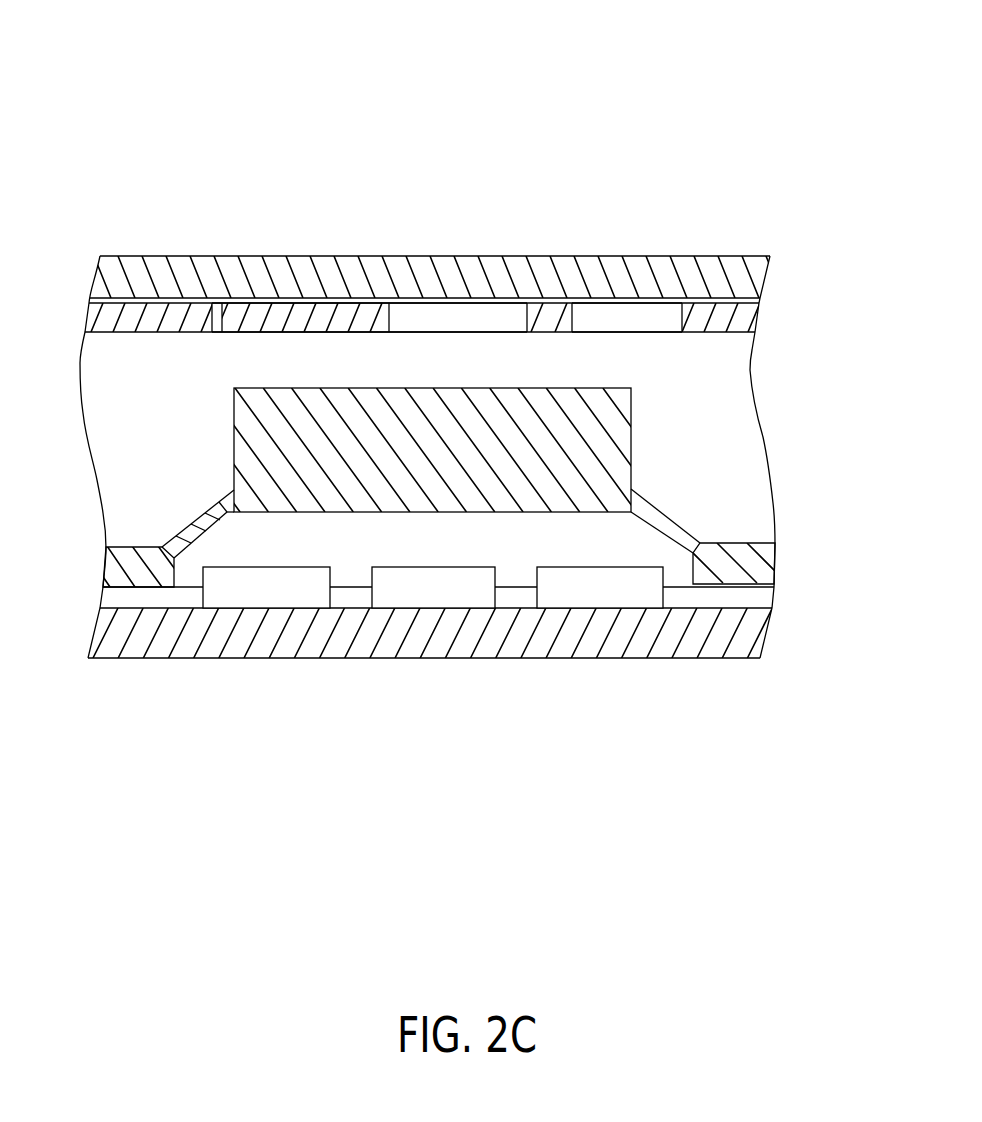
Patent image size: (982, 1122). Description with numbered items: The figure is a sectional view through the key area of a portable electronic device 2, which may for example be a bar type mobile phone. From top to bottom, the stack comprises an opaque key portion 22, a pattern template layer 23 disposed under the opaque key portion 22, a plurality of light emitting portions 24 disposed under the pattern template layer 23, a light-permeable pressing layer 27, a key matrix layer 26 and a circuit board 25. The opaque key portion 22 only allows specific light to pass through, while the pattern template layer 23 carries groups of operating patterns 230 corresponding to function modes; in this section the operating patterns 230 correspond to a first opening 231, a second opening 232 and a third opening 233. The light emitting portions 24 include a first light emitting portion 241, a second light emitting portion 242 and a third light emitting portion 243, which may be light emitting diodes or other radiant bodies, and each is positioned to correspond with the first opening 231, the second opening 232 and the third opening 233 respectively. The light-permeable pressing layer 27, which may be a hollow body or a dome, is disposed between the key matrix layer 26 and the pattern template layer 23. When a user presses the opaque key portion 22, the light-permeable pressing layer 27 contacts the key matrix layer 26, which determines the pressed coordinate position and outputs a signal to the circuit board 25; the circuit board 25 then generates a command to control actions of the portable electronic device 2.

The portable electronic device 2 is at (65, 102).
The opaque key portion 22 is at (728, 271).
The pattern template layer 23 is at (757, 308).
The operating patterns 230 is at (647, 128).
The first opening 231 is at (457, 318).
The second opening 232 is at (222, 318).
The third opening 233 is at (632, 318).
The light emitting portions 24 is at (617, 768).
The first light emitting portion 241 is at (444, 592).
The second light emitting portion 242 is at (264, 592).
The third light emitting portion 243 is at (610, 592).
The circuit board 25 is at (738, 640).
The key matrix layer 26 is at (760, 600).
The light-permeable pressing layer 27 is at (775, 545).